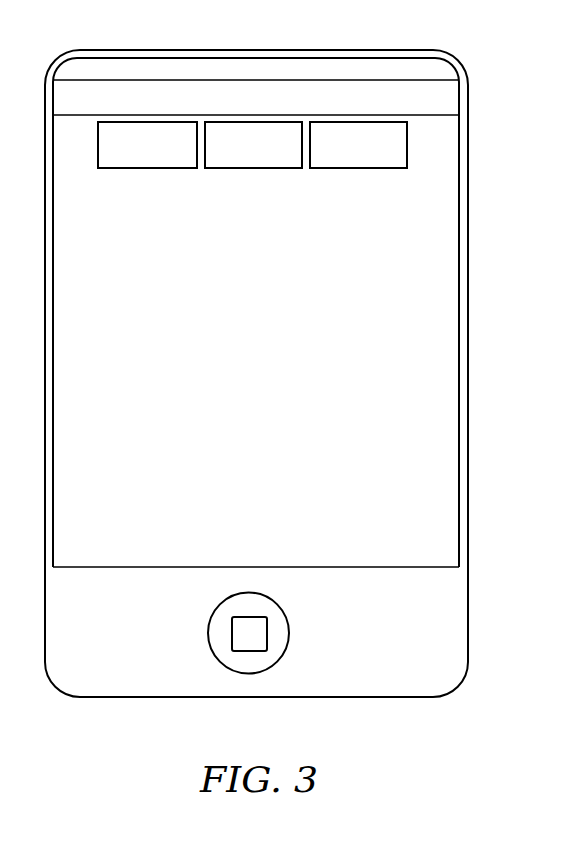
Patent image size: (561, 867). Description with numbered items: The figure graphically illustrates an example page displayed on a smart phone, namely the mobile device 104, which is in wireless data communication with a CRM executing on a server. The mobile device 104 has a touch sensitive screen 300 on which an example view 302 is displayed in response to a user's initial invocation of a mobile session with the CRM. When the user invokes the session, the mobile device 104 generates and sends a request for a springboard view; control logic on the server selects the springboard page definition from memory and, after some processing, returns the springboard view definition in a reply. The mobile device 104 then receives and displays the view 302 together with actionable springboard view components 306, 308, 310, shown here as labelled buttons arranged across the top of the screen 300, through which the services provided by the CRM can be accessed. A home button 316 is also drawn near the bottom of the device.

The mobile device 104 is at (423, 50).
The touch sensitive screen 300 is at (432, 378).
The view 302 is at (273, 374).
The actionable springboard view component 306 is at (238, 168).
The actionable springboard view component 308 is at (407, 147).
The actionable springboard view component 310 is at (135, 168).
The home button 316 is at (289, 635).